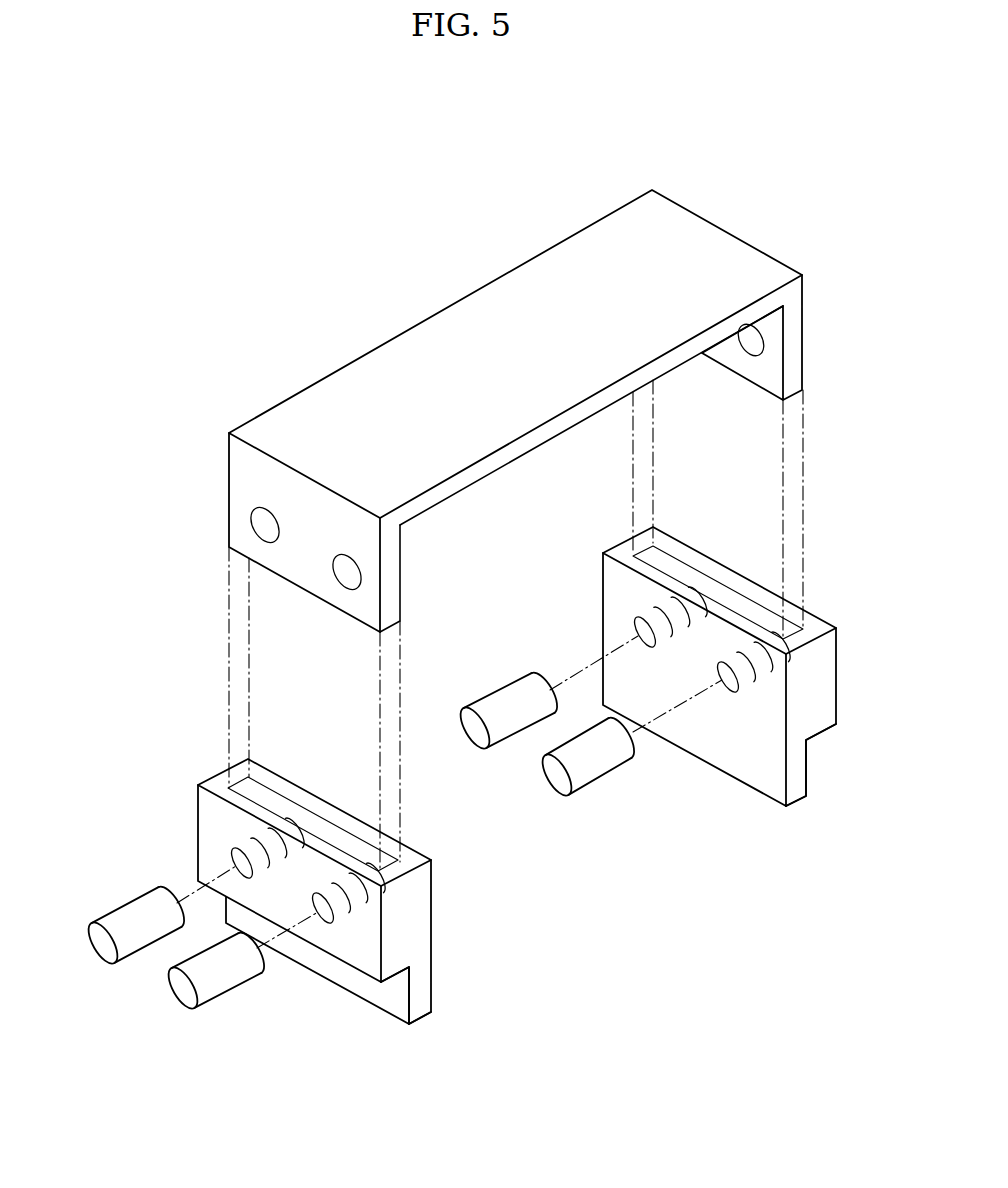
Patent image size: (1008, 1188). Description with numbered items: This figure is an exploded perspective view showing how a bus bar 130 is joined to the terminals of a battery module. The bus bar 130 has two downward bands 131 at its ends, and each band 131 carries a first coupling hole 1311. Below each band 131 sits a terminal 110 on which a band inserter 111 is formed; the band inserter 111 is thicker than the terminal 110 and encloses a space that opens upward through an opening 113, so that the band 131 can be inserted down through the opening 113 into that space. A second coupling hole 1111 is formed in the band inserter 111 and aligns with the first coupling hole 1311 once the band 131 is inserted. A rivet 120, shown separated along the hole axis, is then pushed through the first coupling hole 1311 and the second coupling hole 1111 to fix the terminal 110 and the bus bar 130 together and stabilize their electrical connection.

The bus bar 130 is at (290, 265).
The band 131 is at (790, 335).
The first coupling hole 1311 is at (748, 343).
The terminal 110 is at (432, 990).
The band inserter 111 is at (360, 963).
The opening 113 is at (273, 797).
The second coupling hole 1111 is at (233, 864).
The rivet 120 is at (132, 946).